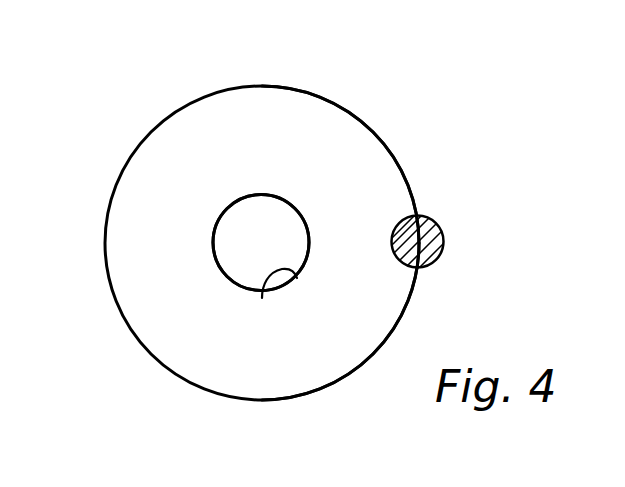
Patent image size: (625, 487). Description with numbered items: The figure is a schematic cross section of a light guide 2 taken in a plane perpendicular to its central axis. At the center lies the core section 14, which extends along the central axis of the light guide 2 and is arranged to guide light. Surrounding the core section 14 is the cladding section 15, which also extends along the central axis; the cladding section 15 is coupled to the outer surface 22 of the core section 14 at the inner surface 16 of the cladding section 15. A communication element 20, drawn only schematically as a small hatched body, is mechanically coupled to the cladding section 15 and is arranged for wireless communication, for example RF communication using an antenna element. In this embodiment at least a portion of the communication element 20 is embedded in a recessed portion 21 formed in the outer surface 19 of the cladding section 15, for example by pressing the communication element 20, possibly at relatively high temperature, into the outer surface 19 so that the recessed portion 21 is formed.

The light guide 2 is at (153, 75).
The core section 14 is at (243, 250).
The cladding section 15 is at (353, 132).
The inner surface of the cladding section 16 is at (262, 298).
The outer surface of the cladding section 19 is at (337, 380).
The communication element 20 is at (443, 235).
The recessed portion 21 is at (398, 217).
The outer surface of the core section 22 is at (233, 203).